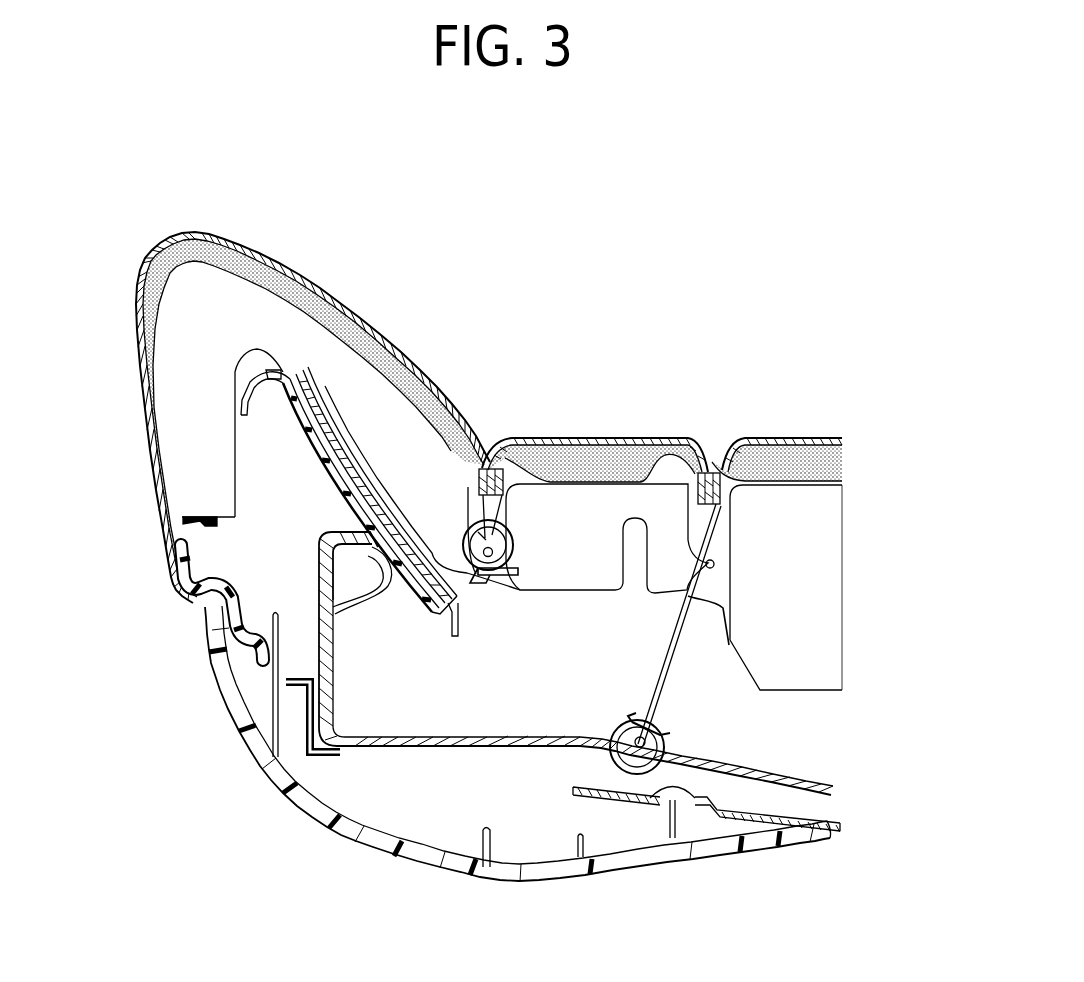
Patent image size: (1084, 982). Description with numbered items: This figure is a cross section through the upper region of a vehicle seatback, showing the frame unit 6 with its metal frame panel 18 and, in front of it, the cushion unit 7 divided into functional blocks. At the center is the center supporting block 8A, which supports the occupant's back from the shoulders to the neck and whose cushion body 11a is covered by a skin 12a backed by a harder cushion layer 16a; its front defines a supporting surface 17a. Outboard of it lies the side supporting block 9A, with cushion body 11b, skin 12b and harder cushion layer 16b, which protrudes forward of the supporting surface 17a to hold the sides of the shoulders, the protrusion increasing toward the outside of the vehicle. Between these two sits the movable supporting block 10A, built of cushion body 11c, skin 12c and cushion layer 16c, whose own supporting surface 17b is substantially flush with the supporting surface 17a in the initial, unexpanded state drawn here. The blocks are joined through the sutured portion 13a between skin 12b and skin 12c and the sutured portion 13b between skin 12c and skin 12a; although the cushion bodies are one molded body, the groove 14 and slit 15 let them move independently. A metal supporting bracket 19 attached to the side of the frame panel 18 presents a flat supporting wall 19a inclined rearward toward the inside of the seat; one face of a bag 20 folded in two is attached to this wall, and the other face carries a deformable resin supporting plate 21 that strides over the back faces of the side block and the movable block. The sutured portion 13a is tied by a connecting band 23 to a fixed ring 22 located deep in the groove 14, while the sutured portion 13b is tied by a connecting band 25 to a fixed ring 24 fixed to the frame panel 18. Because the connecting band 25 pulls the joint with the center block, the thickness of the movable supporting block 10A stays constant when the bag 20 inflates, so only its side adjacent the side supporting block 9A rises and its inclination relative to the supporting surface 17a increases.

The frame unit 6 is at (855, 803).
The cushion unit 7 is at (860, 597).
The center supporting block 8A is at (826, 503).
The side supporting block 9A is at (328, 379).
The movable supporting block 10A is at (597, 440).
The cushion body 11a is at (820, 520).
The cushion body 11b is at (357, 387).
The cushion body 11c is at (613, 527).
The skin 12a is at (823, 437).
The skin 12b is at (262, 258).
The skin 12c is at (557, 437).
The sutured portion 13a is at (490, 469).
The sutured portion 13b is at (713, 470).
The groove 14 is at (477, 493).
The slit 15 is at (717, 607).
The cushion layer 16a is at (820, 457).
The cushion layer 16b is at (340, 313).
The cushion layer 16c is at (623, 453).
The supporting surface 17a is at (803, 437).
The supporting surface 17b is at (587, 437).
The frame panel 18 is at (423, 750).
The supporting bracket 19 is at (260, 575).
The supporting wall 19a is at (353, 487).
The bag 20 is at (320, 447).
The supporting plate 21 is at (287, 390).
The fixed ring 22 is at (498, 572).
The connecting band 23 is at (530, 580).
The fixed ring 24 is at (637, 773).
The connecting band 25 is at (667, 650).